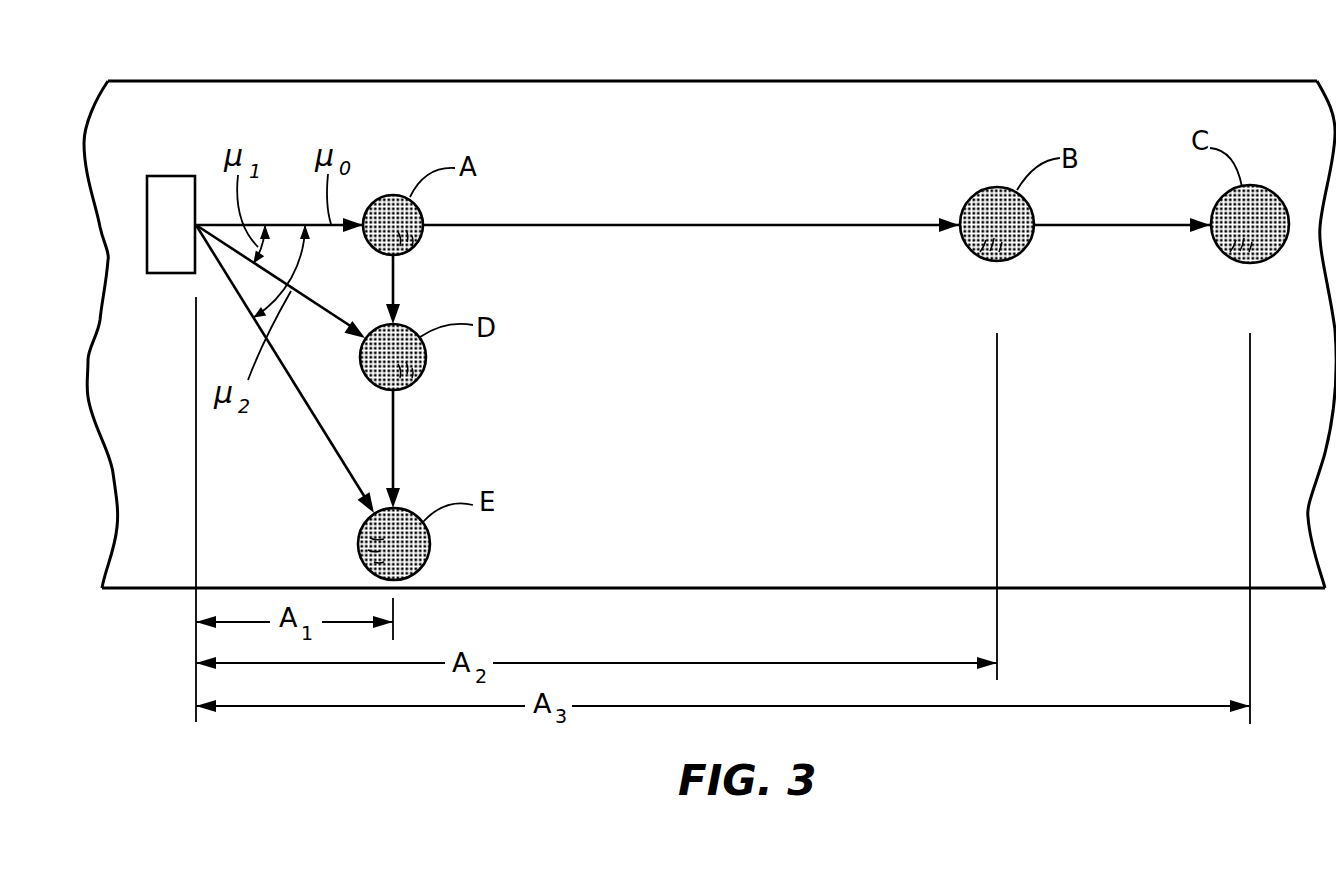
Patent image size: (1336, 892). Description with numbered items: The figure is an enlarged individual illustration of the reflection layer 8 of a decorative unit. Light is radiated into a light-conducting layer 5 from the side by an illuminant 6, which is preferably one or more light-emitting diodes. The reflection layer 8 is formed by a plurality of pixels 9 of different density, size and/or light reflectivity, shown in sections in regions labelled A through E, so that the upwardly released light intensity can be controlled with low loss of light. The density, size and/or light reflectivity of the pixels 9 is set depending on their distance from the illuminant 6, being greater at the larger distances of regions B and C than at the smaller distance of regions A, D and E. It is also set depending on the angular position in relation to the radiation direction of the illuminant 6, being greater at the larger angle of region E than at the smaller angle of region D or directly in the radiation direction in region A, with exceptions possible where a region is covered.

The light-conducting layer 5 is at (663, 125).
The illuminant 6 is at (157, 207).
The reflection layer 8 is at (388, 160).
The pixels 9 is at (411, 238).